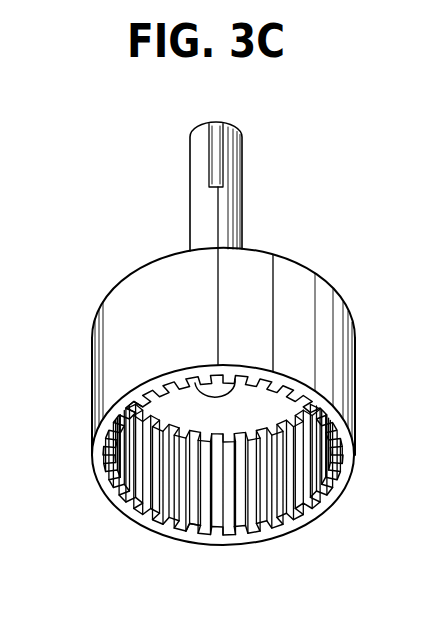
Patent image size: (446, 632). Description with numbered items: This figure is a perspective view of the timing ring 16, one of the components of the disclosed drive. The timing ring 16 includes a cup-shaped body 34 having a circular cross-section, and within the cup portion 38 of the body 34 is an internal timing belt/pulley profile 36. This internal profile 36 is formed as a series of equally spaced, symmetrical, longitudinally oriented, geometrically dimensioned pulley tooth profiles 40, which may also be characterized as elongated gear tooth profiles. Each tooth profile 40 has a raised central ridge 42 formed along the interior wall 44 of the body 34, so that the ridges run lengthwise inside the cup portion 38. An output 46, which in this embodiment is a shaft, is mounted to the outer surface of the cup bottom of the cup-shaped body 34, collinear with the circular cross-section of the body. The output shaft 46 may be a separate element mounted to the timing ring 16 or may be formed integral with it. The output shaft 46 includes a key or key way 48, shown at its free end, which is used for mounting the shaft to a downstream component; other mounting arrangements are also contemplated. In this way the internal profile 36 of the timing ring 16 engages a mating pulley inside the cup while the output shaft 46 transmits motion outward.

The timing ring 16 is at (221, 400).
The cup-shaped body 34 is at (327, 283).
The internal timing belt/pulley profile 36 is at (258, 497).
The cup portion 38 is at (338, 343).
The tooth profile 40 is at (195, 384).
The raised central ridge 42 is at (136, 411).
The interior wall 44 is at (186, 530).
The output shaft 46 is at (247, 160).
The key way 48 is at (213, 128).